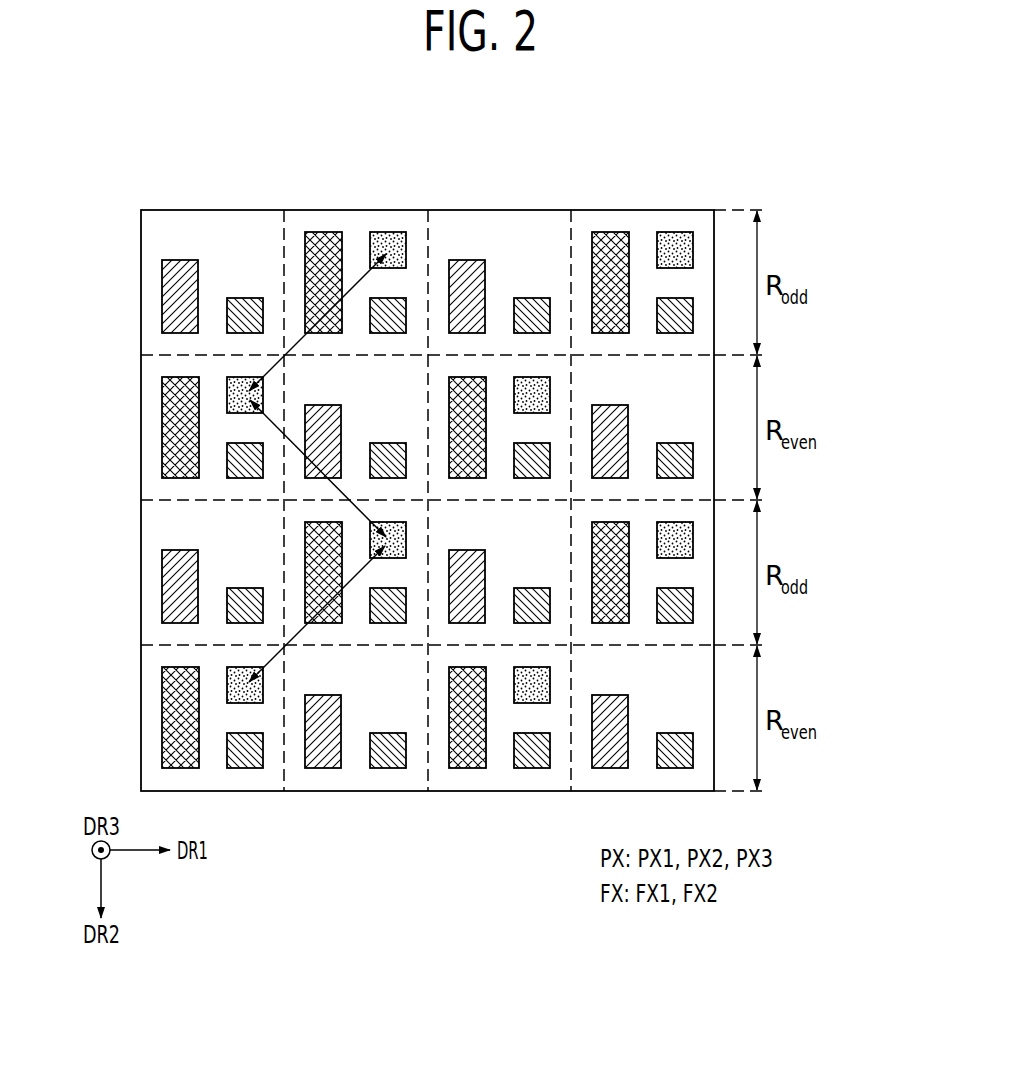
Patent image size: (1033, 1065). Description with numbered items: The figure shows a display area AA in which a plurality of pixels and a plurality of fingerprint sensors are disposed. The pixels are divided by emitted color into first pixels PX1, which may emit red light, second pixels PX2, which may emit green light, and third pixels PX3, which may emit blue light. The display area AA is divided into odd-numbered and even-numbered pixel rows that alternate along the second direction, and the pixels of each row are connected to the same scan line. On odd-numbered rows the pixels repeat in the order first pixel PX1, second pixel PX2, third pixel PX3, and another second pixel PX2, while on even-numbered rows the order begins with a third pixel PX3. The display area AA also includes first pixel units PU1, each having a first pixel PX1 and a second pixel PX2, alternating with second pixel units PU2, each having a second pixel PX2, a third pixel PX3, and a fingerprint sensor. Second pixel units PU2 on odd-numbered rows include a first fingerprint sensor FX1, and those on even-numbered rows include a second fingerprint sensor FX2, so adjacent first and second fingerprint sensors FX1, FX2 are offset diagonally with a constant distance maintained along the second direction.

The display area AA is at (676, 151).
The first pixel unit PU1 is at (219, 230).
The second pixel unit PU2 is at (354, 230).
The first pixel PX1 is at (180, 260).
The second pixel PX2 is at (247, 298).
The third pixel PX3 is at (323, 232).
The first fingerprint sensor FX1 is at (389, 232).
The second fingerprint sensor FX2 is at (227, 394).